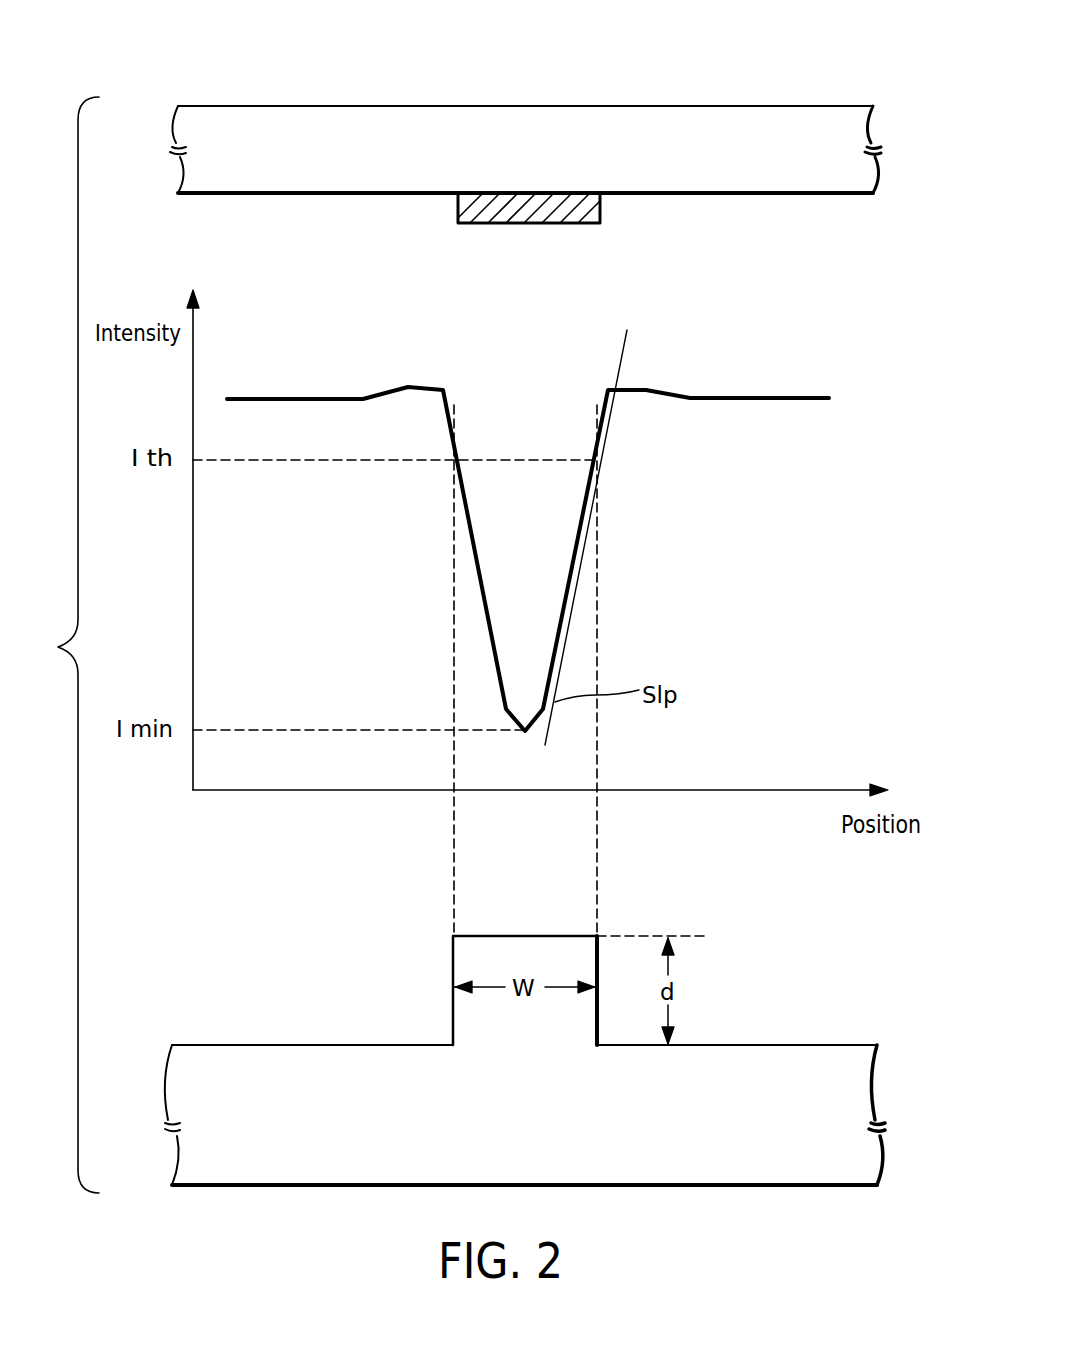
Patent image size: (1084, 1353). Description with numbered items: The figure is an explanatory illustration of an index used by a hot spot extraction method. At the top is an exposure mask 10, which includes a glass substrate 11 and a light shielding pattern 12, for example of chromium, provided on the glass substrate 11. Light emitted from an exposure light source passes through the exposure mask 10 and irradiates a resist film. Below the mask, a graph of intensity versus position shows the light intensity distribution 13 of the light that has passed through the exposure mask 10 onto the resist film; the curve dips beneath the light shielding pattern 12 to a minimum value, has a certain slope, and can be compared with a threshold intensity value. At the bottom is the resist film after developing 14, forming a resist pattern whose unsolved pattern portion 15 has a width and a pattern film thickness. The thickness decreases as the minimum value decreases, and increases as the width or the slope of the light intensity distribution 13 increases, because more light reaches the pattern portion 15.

The exposure mask 10 is at (822, 79).
The glass substrate 11 is at (880, 118).
The light shielding pattern 12 is at (601, 208).
The light intensity distribution 13 is at (788, 397).
The resist film after developing 14 is at (858, 1073).
The pattern portion 15 is at (468, 1016).